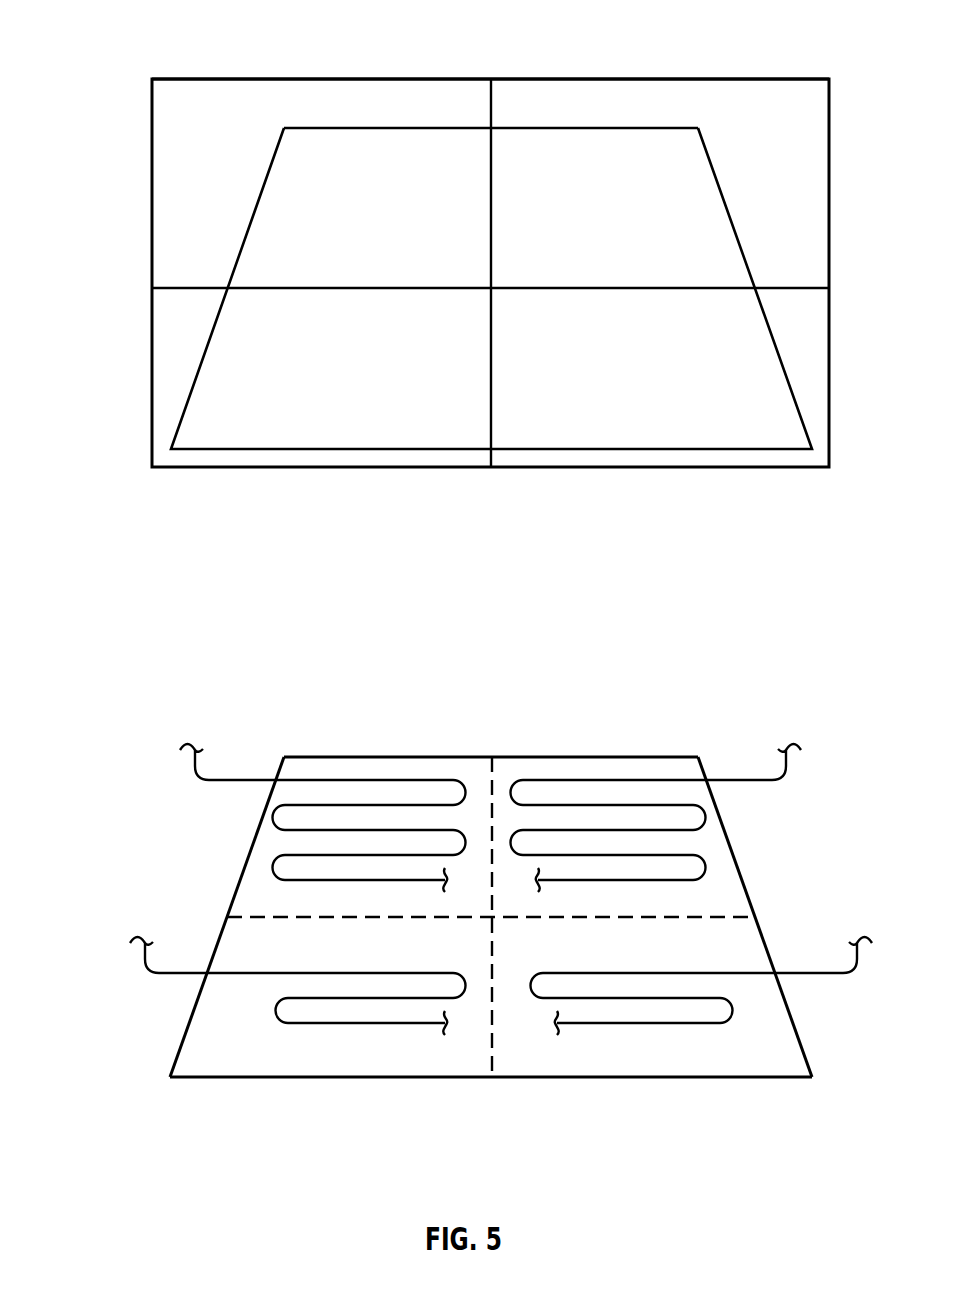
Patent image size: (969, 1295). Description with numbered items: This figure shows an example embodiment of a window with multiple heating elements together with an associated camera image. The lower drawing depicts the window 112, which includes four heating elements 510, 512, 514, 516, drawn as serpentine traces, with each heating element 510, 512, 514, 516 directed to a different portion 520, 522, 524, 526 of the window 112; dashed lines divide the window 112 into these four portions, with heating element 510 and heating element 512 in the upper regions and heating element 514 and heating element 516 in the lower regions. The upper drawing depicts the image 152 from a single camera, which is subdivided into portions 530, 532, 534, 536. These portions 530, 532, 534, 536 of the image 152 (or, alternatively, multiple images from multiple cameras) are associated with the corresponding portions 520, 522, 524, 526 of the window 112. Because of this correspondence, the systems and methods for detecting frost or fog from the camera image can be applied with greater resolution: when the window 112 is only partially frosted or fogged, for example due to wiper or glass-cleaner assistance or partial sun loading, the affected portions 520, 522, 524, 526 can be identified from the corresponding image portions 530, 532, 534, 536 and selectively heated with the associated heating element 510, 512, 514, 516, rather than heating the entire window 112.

The image 152 is at (142, 326).
The portion of image 530 is at (265, 118).
The portion of image 532 is at (759, 105).
The portion of image 534 is at (205, 455).
The portion of image 536 is at (803, 455).
The window 112 is at (185, 875).
The heating element 510 is at (357, 780).
The heating element 512 is at (586, 780).
The heating element 514 is at (357, 1023).
The heating element 516 is at (643, 1023).
The portion of window 520 is at (481, 757).
The portion of window 522 is at (683, 752).
The portion of window 524 is at (222, 1033).
The portion of window 526 is at (780, 1043).